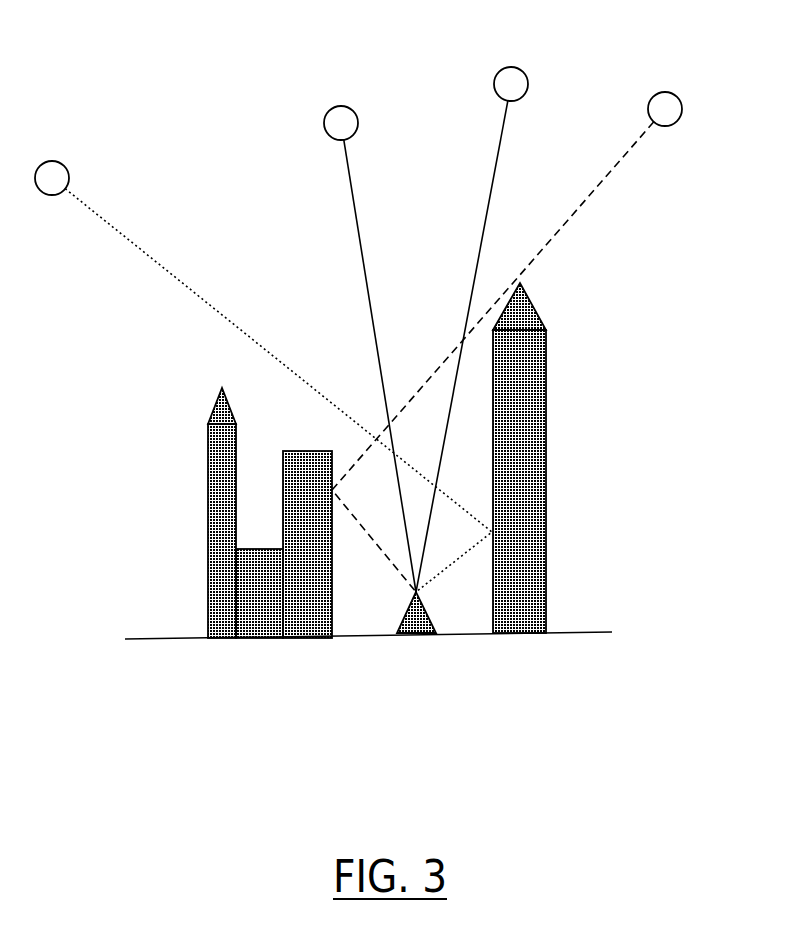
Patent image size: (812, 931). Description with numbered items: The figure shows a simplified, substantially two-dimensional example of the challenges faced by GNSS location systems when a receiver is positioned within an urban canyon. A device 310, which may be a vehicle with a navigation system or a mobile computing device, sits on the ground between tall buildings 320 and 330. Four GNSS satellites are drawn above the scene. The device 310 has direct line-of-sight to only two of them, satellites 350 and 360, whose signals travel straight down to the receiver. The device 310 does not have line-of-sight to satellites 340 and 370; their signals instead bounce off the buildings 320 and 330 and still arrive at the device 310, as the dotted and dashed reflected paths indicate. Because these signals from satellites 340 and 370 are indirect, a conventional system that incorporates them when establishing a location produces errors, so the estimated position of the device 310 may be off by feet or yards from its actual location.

The device 310 is at (466, 652).
The tall building 320 is at (220, 513).
The tall building 330 is at (578, 458).
The satellite 340 is at (263, 351).
The satellite 350 is at (390, 322).
The satellite 360 is at (528, 305).
The satellite 370 is at (562, 315).